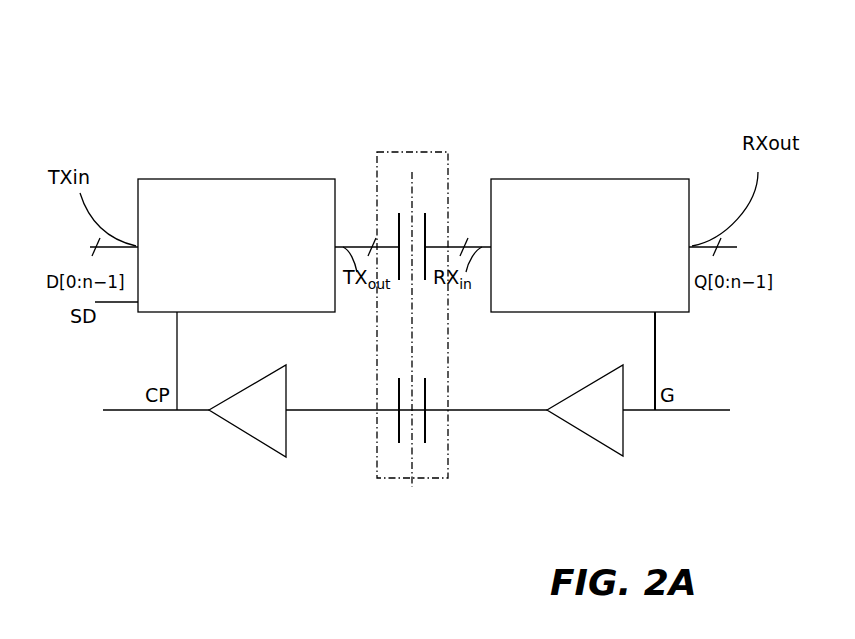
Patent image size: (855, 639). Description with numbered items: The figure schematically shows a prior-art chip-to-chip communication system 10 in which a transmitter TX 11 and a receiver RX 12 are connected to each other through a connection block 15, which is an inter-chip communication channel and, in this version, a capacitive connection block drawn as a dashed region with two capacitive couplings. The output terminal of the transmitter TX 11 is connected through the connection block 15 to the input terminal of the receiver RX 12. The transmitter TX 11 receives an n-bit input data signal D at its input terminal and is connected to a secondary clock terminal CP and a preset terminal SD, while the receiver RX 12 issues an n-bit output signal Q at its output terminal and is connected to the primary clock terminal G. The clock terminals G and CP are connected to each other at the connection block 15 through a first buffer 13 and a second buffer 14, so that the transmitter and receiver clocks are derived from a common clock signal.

The system 10 is at (448, 102).
The transmitter TX 11 is at (188, 195).
The receiver RX 12 is at (625, 208).
The first buffer 13 is at (262, 420).
The second buffer 14 is at (612, 420).
The connection block 15 is at (388, 466).